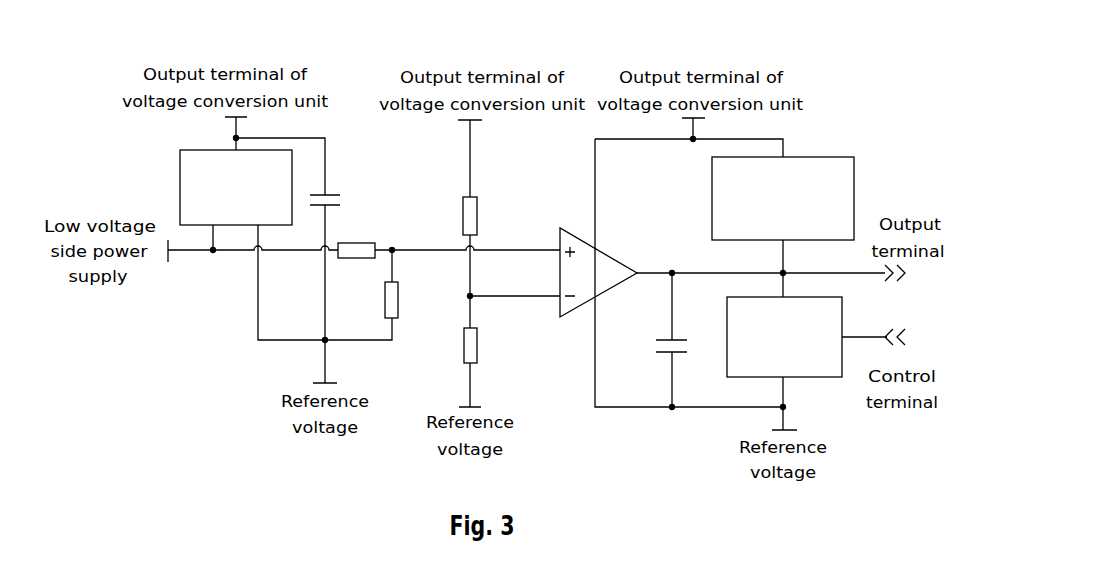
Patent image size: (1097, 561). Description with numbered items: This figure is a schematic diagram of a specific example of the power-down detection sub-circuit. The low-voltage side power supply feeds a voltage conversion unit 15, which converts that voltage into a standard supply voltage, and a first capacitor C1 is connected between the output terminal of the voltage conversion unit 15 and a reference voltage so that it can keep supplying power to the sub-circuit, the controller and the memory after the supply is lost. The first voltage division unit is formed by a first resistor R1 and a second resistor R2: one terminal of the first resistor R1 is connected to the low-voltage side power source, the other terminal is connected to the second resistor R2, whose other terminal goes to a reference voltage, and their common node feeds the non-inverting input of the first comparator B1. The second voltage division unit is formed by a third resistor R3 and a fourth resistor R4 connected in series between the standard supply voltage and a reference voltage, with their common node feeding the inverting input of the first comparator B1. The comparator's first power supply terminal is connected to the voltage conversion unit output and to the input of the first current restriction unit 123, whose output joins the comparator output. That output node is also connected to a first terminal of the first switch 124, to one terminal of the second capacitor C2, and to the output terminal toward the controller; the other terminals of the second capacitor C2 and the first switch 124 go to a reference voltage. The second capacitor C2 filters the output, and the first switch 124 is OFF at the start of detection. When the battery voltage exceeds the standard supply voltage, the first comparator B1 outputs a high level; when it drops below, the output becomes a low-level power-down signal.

The voltage conversion unit 15 is at (236, 187).
The first current restriction unit 123 is at (783, 198).
The first switch 124 is at (784, 337).
The first capacitor C1 is at (338, 204).
The second capacitor C2 is at (684, 340).
The first resistor R1 is at (356, 262).
The second resistor R2 is at (379, 300).
The third resistor R3 is at (456, 216).
The fourth resistor R4 is at (456, 345).
The first comparator B1 is at (598, 272).